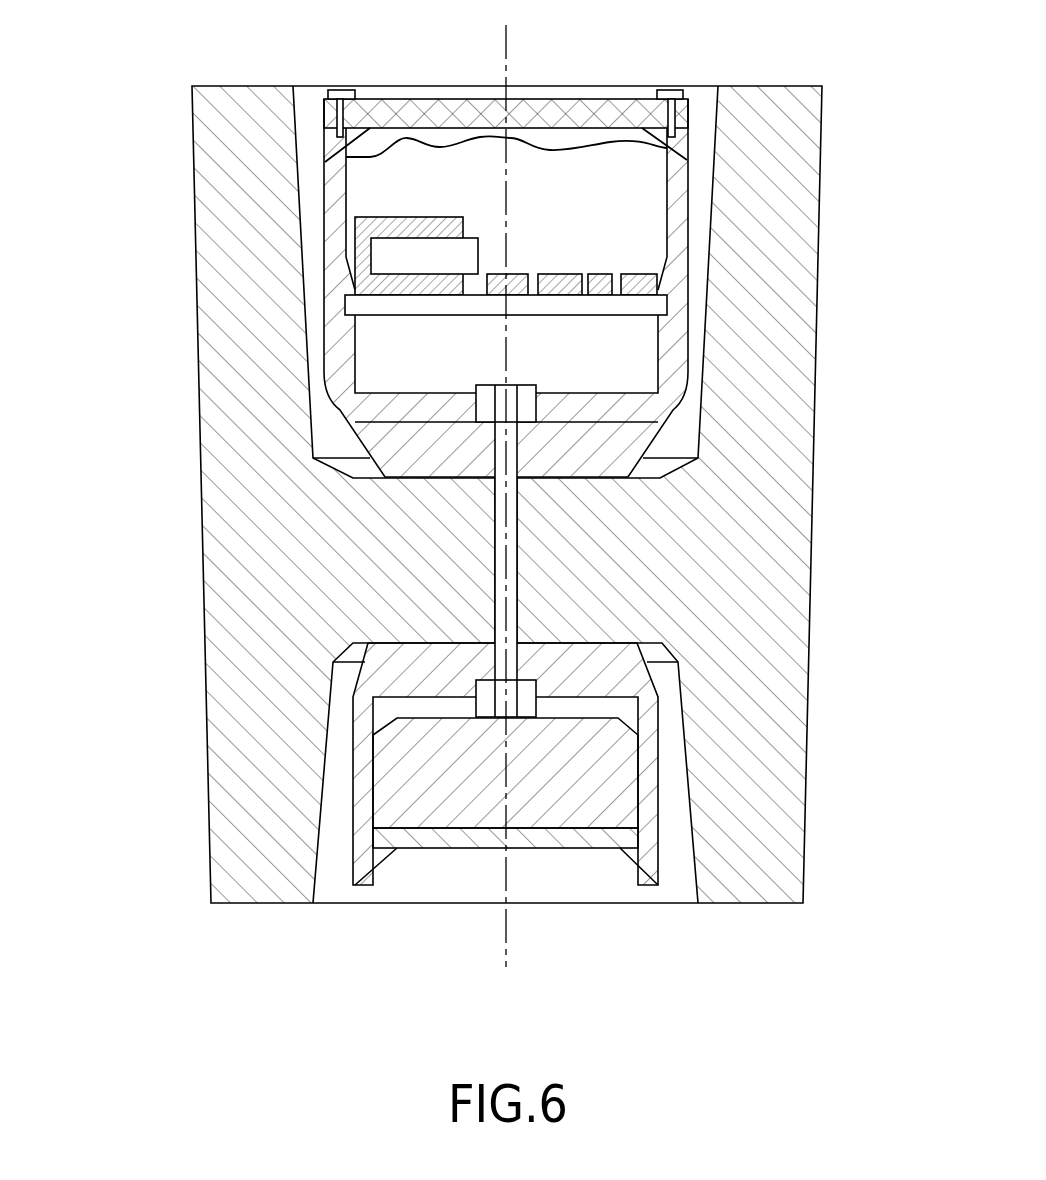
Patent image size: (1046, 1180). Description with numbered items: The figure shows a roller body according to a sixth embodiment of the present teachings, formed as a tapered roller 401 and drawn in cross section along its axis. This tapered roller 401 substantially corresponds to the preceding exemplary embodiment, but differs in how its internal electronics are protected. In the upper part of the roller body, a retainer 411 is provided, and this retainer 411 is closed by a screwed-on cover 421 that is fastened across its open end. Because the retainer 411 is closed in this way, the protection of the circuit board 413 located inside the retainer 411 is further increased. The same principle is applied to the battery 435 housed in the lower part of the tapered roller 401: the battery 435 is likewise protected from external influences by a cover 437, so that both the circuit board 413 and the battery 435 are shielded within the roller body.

The tapered roller 401 is at (142, 162).
The retainer 411 is at (680, 182).
The screwed-on cover 421 is at (547, 113).
The circuit board 413 is at (578, 306).
The battery 435 is at (585, 795).
The cover 437 is at (448, 838).